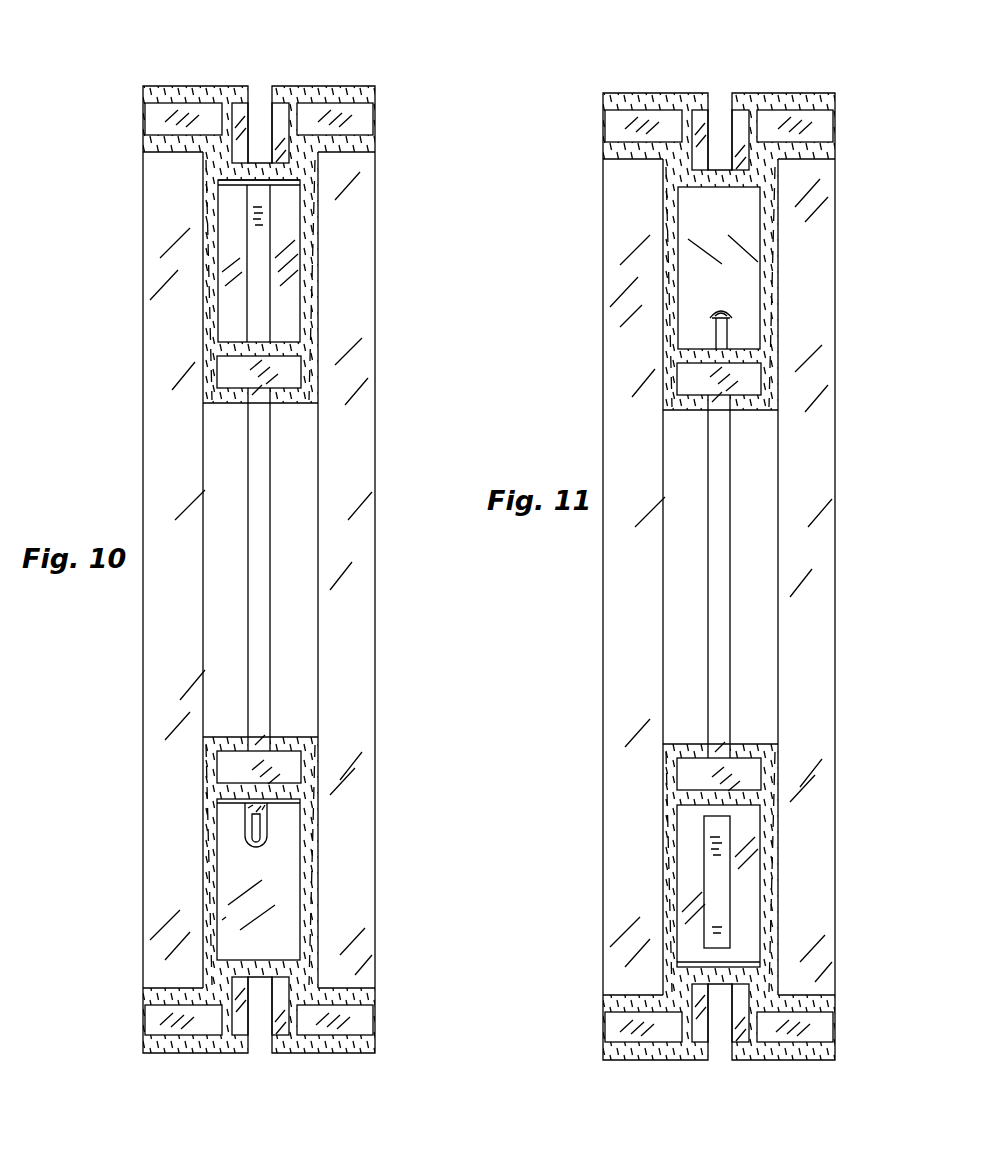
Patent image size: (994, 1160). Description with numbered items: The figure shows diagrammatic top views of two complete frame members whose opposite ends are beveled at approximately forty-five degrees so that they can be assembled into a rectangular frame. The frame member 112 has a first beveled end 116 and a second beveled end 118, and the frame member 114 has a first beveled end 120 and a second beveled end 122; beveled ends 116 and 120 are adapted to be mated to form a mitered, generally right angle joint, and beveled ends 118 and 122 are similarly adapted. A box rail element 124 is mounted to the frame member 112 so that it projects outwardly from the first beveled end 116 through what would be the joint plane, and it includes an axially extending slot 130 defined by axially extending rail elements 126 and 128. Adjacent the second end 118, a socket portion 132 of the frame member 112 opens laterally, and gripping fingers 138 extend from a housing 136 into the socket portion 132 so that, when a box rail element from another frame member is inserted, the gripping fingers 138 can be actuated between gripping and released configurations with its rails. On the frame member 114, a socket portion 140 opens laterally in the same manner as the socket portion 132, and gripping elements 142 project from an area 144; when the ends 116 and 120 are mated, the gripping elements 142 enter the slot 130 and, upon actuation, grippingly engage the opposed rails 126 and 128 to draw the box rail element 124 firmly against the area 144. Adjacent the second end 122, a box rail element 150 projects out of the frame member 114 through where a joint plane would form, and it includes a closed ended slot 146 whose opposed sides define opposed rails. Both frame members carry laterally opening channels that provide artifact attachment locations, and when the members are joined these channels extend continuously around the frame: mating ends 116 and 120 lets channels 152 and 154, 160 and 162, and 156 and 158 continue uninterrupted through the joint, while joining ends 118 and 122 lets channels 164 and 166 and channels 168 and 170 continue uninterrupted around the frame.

In FIG. 10, the frame member 112 is at (378, 548).
In FIG. 11, the frame member 114 is at (671, 576).
In FIG. 10, the first beveled end 116 is at (201, 97).
In FIG. 10, the second beveled end 118 is at (203, 1043).
In FIG. 11, the first beveled end 120 is at (670, 239).
In FIG. 11, the second beveled end 122 is at (669, 902).
In FIG. 10, the box rail element 124 is at (240, 183).
In FIG. 10, the axially extending rail element 126 is at (245, 216).
In FIG. 10, the axially extending rail element 128 is at (277, 215).
In FIG. 10, the axially extending slot 130 is at (257, 268).
In FIG. 10, the socket portion 132 is at (252, 883).
In FIG. 10, the housing 136 is at (275, 803).
In FIG. 10, the gripping fingers 138 is at (257, 845).
In FIG. 11, the socket portion 140 is at (621, 268).
In FIG. 11, the gripping elements 142 is at (631, 304).
In FIG. 11, the area 144 is at (612, 336).
In FIG. 11, the closed ended slot 146 is at (614, 882).
In FIG. 11, the box rail element 150 is at (603, 888).
In FIG. 10, the laterally opening channel 152 is at (256, 97).
In FIG. 11, the laterally opening channel 154 is at (754, 94).
In FIG. 10, the laterally opening channel 156 is at (257, 452).
In FIG. 11, the laterally opening channel 158 is at (634, 577).
In FIG. 10, the laterally opening channel 160 is at (363, 112).
In FIG. 11, the laterally opening channel 162 is at (593, 137).
In FIG. 10, the laterally opening channel 164 is at (257, 1028).
In FIG. 11, the laterally opening channel 166 is at (764, 1040).
In FIG. 10, the laterally opening channel 168 is at (363, 1024).
In FIG. 11, the laterally opening channel 170 is at (590, 1004).